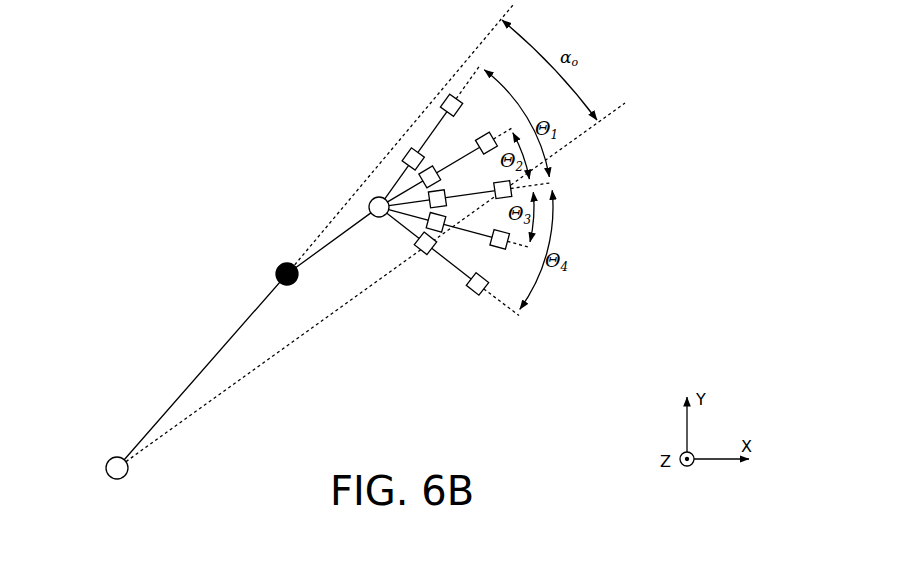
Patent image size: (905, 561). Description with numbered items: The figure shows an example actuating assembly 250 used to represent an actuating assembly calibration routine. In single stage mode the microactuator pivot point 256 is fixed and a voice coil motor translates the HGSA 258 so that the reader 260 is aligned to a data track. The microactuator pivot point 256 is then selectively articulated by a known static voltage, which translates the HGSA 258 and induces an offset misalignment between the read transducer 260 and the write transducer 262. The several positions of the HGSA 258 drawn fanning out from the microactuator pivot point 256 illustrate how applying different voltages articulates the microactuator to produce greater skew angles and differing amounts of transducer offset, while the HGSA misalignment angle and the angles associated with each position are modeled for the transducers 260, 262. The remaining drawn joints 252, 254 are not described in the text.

The actuating assembly 250 is at (218, 128).
The base joint 252 is at (106, 463).
The intermediate joint 254 is at (279, 267).
The microactuator pivot point 256 is at (364, 204).
The HGSA 258 is at (427, 288).
The reader 260 is at (416, 247).
The write transducer 262 is at (478, 294).